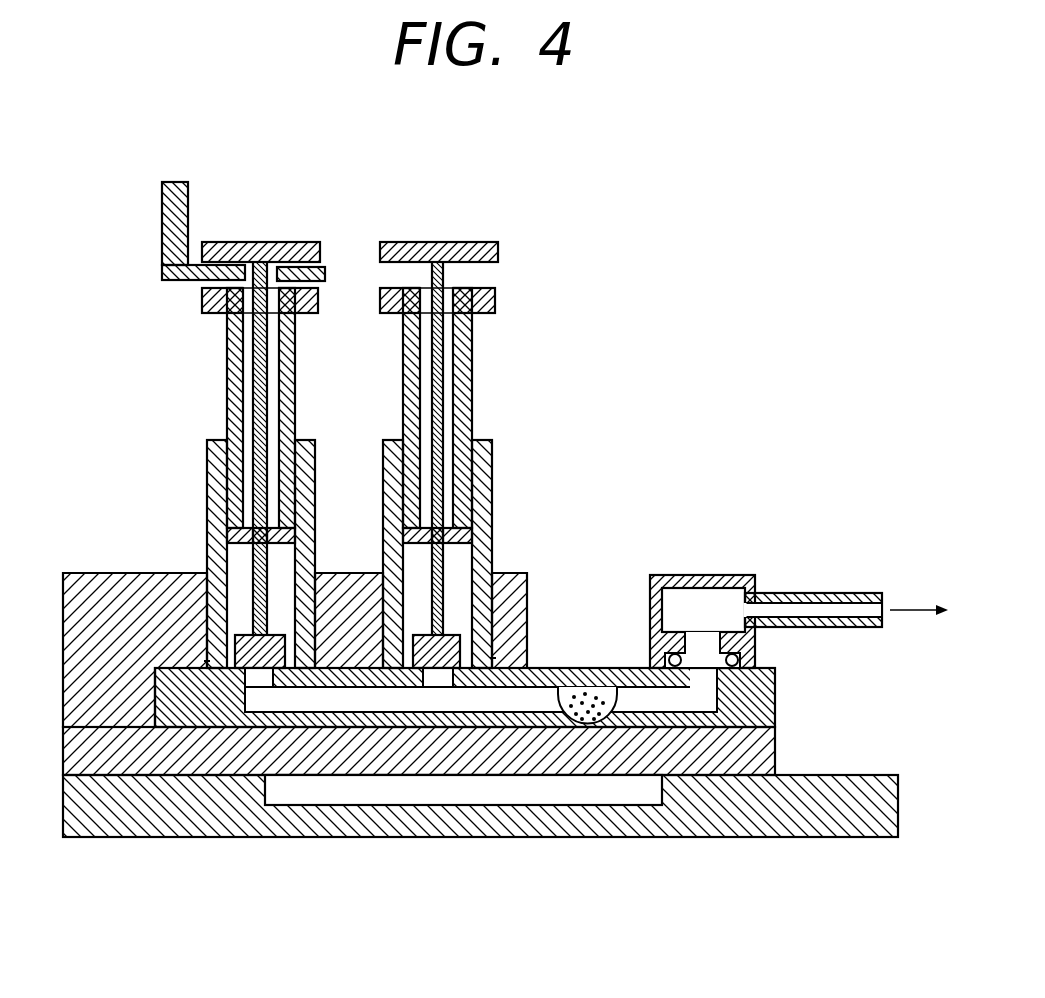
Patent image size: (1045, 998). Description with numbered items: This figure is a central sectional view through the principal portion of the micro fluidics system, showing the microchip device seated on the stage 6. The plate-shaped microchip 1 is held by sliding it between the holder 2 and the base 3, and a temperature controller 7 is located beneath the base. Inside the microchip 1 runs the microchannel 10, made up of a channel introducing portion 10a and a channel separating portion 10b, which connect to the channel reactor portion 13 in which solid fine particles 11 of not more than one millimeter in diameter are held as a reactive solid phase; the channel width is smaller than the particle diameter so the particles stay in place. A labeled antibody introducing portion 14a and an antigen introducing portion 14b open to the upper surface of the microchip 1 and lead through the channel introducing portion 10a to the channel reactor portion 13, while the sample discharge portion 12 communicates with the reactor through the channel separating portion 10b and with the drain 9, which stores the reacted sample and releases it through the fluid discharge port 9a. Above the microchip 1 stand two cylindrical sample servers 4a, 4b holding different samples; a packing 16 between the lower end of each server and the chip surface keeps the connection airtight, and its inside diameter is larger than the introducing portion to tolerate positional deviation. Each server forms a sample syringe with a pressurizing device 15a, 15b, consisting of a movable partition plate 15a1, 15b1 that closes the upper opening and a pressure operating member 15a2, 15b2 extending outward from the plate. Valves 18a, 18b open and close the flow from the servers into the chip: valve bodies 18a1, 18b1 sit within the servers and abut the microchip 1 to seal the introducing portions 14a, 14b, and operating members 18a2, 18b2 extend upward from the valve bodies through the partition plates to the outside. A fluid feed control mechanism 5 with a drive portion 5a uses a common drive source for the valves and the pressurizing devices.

The microchip 1 is at (758, 692).
The holder 2 is at (508, 573).
The base 3 is at (760, 745).
The sample server 4a is at (492, 453).
The sample server 4b is at (205, 455).
The fluid feed control mechanism 5 is at (150, 200).
The drive portion 5a is at (185, 282).
The stage 6 is at (837, 818).
The temperature controller 7 is at (437, 790).
The drain 9 is at (716, 575).
The fluid discharge port 9a is at (840, 593).
The microchannel 10 is at (320, 702).
The channel introducing portion 10a is at (507, 701).
The channel separating portion 10b is at (685, 704).
The solid fine particles 11 is at (588, 695).
The sample discharge portion 12 is at (707, 681).
The channel reactor portion 13 is at (600, 726).
The labeled antibody introducing portion 14a is at (442, 681).
The antigen introducing portion 14b is at (262, 679).
The pressurizing device 15a is at (508, 406).
The partition plate 15a1 is at (468, 530).
The pressure operating member 15a2 is at (463, 298).
The pressurizing device 15b is at (301, 411).
The partition plate 15b1 is at (287, 537).
The pressure operating member 15b2 is at (284, 290).
The packing 16 is at (207, 661).
The valve 18a is at (457, 565).
The valve body 18a1 is at (422, 664).
The operating member 18a2 is at (443, 417).
The valve 18b is at (242, 558).
The valve body 18b1 is at (247, 667).
The operating member 18b2 is at (257, 372).